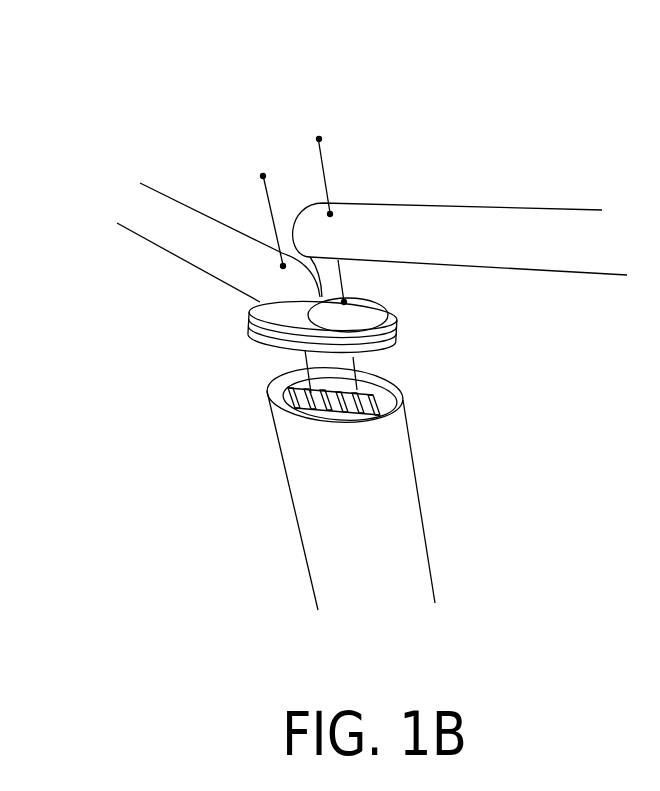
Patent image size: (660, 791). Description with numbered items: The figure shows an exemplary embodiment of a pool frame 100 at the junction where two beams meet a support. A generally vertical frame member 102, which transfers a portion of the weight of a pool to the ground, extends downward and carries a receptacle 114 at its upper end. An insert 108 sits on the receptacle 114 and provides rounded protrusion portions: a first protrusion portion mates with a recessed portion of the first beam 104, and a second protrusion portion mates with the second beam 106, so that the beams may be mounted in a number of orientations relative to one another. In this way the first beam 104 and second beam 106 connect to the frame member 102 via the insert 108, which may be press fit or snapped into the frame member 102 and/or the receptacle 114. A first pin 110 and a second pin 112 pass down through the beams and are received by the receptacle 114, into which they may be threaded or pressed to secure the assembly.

The pool frame 100 is at (98, 65).
The frame member 102 is at (283, 468).
The first beam 104 is at (210, 215).
The second beam 106 is at (453, 205).
The insert 108 is at (263, 330).
The first pin 110 is at (263, 174).
The second pin 112 is at (325, 135).
The receptacle 114 is at (378, 407).